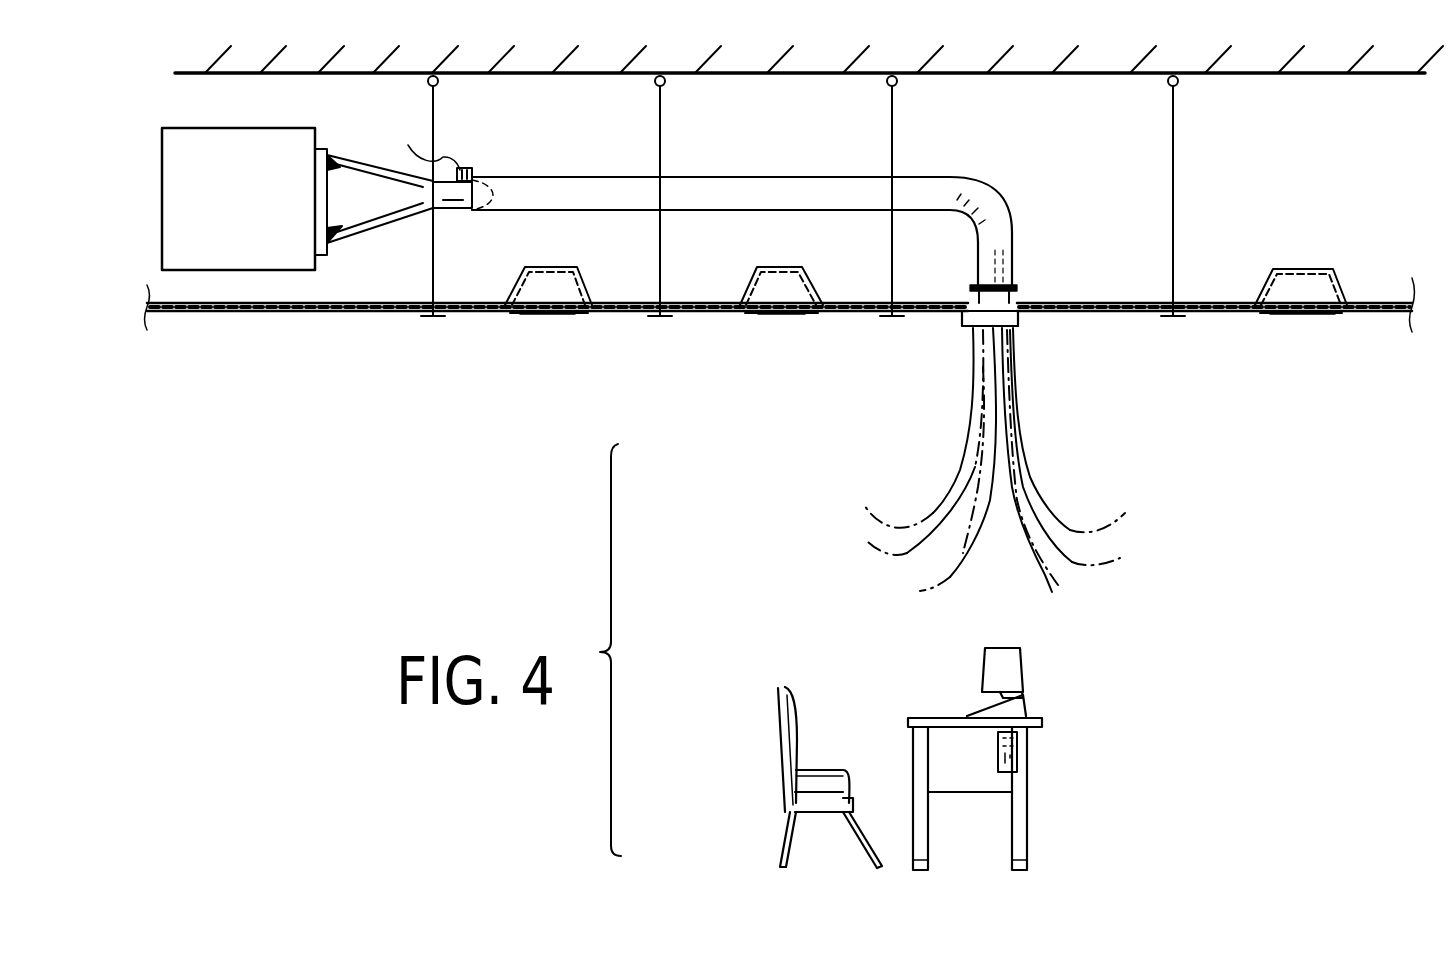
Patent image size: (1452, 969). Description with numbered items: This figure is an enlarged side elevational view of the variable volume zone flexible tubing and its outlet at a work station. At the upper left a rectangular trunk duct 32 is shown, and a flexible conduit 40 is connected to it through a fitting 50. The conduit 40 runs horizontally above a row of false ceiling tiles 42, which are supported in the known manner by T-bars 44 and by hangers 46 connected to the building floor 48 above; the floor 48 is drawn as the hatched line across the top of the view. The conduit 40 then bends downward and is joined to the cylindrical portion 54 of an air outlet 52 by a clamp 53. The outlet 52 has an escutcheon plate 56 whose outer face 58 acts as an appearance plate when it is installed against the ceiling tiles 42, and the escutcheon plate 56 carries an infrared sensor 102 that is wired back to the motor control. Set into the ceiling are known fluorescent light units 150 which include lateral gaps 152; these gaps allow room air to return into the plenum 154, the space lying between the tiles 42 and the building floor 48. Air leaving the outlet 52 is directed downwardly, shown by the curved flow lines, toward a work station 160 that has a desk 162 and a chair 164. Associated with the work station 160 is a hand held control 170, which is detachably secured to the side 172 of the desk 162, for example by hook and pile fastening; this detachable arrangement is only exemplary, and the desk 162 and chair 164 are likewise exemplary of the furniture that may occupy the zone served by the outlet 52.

The trunk duct 32 is at (246, 218).
The flexible conduit 40 is at (793, 184).
The false ceiling tiles 42 is at (362, 313).
The T-bars 44 is at (434, 317).
The hangers 46 is at (1174, 158).
The building floor 48 is at (866, 42).
The fitting 50 is at (350, 193).
The air outlet 52 is at (962, 330).
The clamp 53 is at (1016, 284).
The cylindrical portion 54 is at (1000, 260).
The escutcheon plate 56 is at (1021, 322).
The outer face 58 is at (972, 365).
The infrared sensor 102 is at (1012, 340).
The fluorescent light units 150 is at (758, 266).
The lateral gaps 152 is at (745, 313).
The plenum 154 is at (1076, 150).
The work station 160 is at (857, 645).
The desk 162 is at (1030, 746).
The chair 164 is at (780, 740).
The hand held control 170 is at (1017, 768).
The side of desk 172 is at (986, 771).